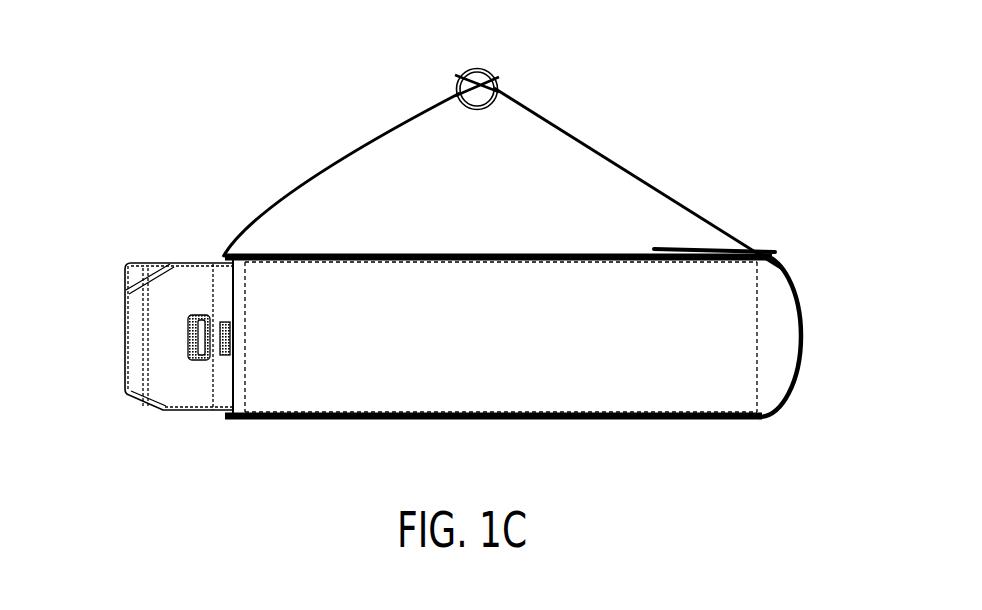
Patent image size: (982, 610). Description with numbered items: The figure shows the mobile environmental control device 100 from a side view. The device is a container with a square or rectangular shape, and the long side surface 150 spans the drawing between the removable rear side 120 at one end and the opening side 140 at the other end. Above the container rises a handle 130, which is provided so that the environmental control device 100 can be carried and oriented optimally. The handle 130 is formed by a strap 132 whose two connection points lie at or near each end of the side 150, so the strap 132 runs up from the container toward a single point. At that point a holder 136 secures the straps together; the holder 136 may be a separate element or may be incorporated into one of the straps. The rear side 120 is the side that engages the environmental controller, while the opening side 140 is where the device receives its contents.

The mobile environmental control device 100 is at (772, 106).
The removable rear side 120 is at (125, 325).
The handle 130 is at (514, 69).
The strap 132 is at (645, 177).
The holder 136 is at (478, 68).
The opening side 140 is at (798, 300).
The side surface 150 is at (595, 396).